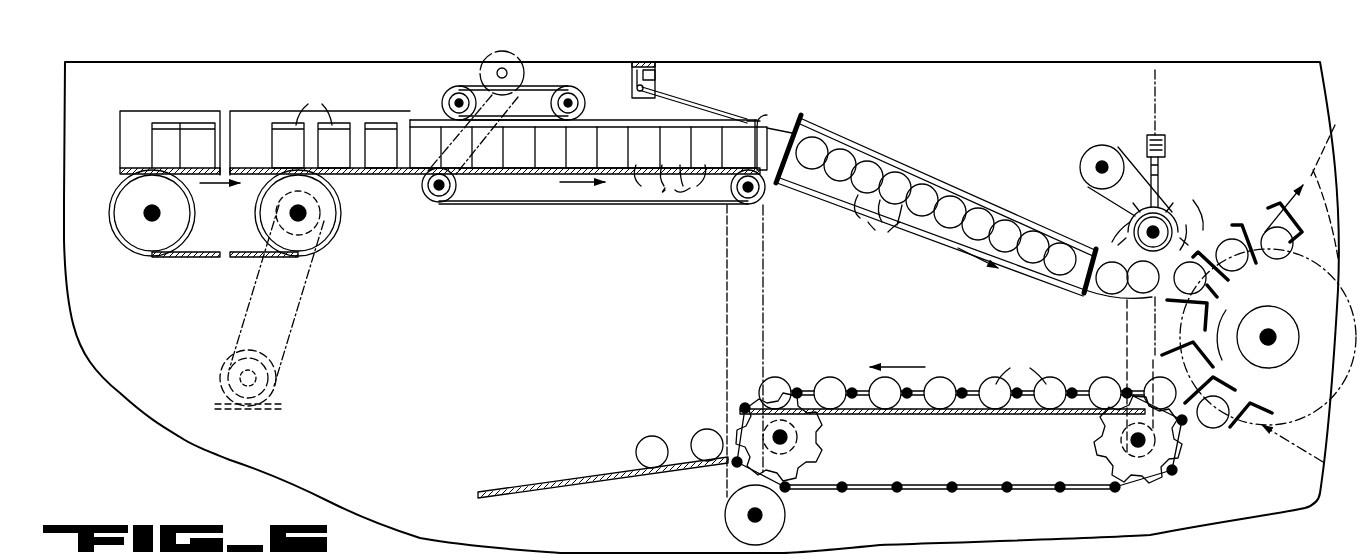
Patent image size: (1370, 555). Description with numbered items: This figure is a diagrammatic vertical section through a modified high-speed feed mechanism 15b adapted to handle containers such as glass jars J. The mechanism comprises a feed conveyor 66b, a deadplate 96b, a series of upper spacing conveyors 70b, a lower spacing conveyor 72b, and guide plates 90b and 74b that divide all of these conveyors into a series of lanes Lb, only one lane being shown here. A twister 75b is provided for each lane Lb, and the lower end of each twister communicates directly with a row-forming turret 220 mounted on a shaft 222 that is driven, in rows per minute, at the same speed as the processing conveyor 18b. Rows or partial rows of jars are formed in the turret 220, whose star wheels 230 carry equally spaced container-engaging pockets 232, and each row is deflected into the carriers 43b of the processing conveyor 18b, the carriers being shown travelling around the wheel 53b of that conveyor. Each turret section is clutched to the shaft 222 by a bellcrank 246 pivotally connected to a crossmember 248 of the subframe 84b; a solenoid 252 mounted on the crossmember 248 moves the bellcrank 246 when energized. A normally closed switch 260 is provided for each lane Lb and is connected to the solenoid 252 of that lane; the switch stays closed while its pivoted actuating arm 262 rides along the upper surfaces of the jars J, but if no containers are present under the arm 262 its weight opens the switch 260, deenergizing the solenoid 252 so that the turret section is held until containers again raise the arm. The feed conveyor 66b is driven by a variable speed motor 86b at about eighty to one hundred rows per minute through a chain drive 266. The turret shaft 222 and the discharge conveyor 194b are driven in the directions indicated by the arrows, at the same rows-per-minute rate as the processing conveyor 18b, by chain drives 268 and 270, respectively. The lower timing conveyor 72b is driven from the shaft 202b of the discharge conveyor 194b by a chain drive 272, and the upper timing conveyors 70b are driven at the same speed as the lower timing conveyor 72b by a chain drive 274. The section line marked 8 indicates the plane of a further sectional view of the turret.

The lane Lb is at (133, 112).
The guide plate 90b is at (245, 113).
The glass jar J is at (671, 232).
The upper spacing conveyor 70b is at (545, 88).
The normally closed switch 260 is at (657, 76).
The pivoted actuating arm 262 is at (668, 102).
The guide plate 74b is at (768, 122).
The twister 75b is at (879, 144).
The high-speed feed mechanism 15b is at (980, 143).
The section line 8- 8 is at (1155, 75).
The crossmember 248 is at (1165, 140).
The solenoid 252 is at (1147, 140).
The bellcrank 246 is at (1160, 174).
The row-forming turret 220 is at (1182, 206).
The shaft 222 is at (1147, 232).
The star wheel 230 is at (1127, 208).
The container-engaging pocket 232 is at (1193, 230).
The processing conveyor 18b is at (1310, 167).
The carrier 43b is at (1242, 332).
The turret hub wheel 53b is at (1274, 332).
The chain drive 268 is at (1230, 352).
The chain drive 270 is at (1130, 317).
The chain drive 272 is at (725, 319).
The subframe 84b is at (572, 301).
The deadplate 96b is at (396, 176).
The feed conveyor 66b is at (182, 259).
The chain drive 274 is at (462, 187).
The lower spacing conveyor 72b is at (560, 208).
The chain drive 266 is at (292, 330).
The variable speed motor 86b is at (280, 378).
The discharge conveyor 194b is at (737, 412).
The shaft 202b is at (790, 437).